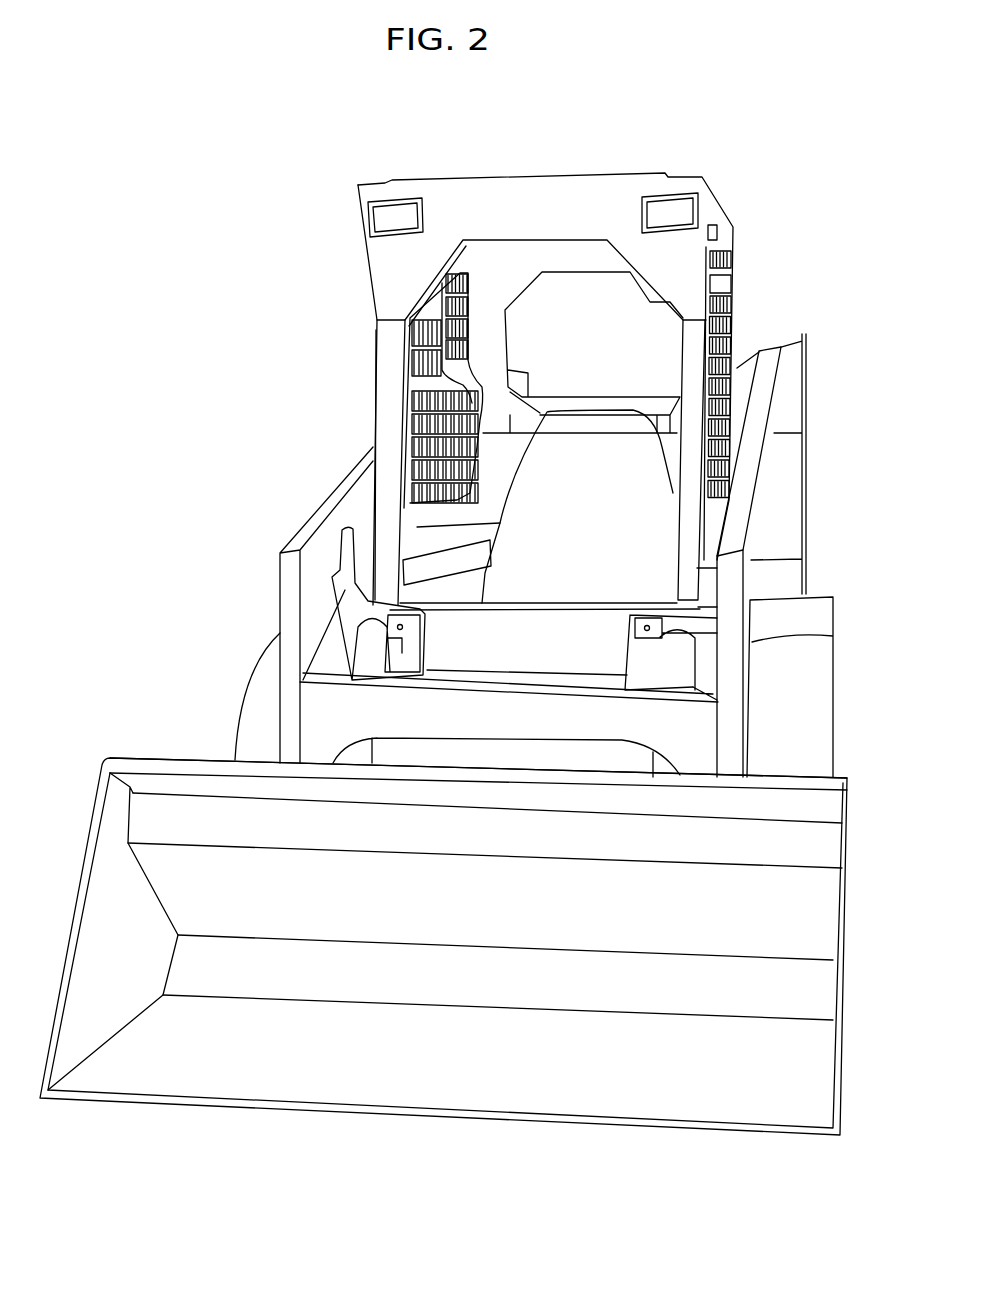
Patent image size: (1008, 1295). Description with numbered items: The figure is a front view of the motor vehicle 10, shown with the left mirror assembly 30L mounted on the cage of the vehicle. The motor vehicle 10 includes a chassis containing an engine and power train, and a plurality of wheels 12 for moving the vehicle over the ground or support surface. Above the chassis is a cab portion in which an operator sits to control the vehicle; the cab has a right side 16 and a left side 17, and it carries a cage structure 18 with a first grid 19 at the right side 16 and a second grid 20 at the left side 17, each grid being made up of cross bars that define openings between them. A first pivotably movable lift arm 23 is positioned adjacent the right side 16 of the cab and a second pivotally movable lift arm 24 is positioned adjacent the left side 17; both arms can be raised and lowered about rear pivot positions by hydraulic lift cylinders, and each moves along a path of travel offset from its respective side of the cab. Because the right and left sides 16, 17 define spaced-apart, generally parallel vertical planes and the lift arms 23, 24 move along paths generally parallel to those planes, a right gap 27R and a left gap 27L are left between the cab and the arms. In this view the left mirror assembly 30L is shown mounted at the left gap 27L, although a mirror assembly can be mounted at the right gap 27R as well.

The motor vehicle 10 is at (279, 411).
The wheels 12 is at (819, 742).
The right side 16 is at (744, 345).
The left side 17 is at (364, 332).
The cage structure 18 is at (725, 433).
The first grid 19 is at (727, 381).
The second grid 20 is at (423, 395).
The first pivotably movable lift arm 23 is at (736, 525).
The second pivotally movable lift arm 24 is at (296, 551).
The right gap 27R is at (369, 514).
The left gap 27L is at (710, 534).
The left mirror assembly 30L is at (733, 279).